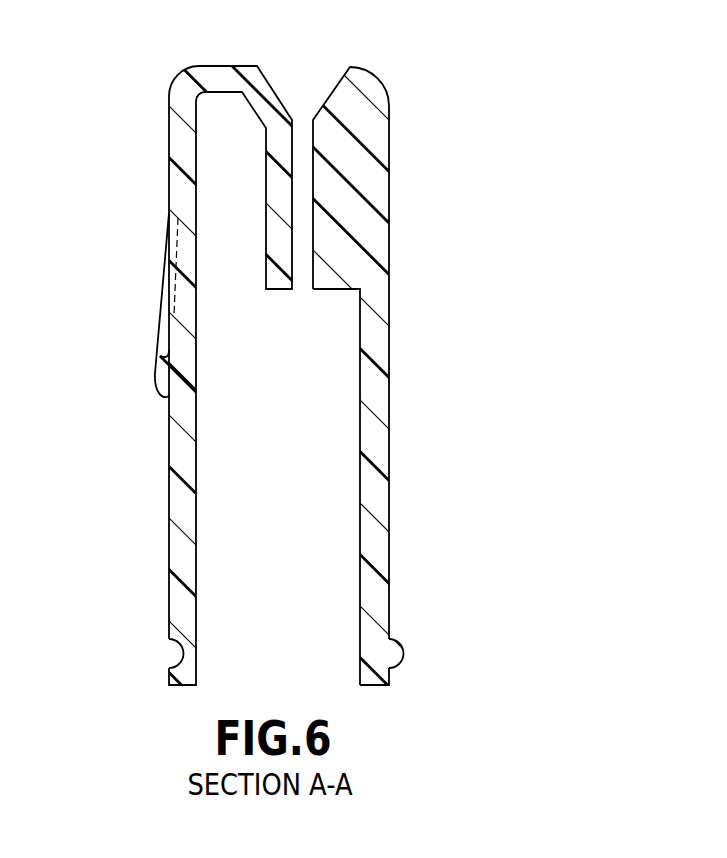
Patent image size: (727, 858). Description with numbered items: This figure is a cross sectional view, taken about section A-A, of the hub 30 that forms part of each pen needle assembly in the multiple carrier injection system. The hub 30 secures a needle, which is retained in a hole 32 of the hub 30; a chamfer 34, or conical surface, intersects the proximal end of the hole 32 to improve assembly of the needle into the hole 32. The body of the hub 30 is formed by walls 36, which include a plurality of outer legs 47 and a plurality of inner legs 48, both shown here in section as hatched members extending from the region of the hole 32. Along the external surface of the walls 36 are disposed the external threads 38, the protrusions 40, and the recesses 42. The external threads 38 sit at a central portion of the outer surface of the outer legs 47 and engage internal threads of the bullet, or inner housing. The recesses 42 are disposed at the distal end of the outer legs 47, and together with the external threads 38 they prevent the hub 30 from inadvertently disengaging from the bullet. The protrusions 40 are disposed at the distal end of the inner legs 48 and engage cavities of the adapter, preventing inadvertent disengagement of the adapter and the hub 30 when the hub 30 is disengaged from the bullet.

The hub 30 is at (314, 429).
The hole 32 is at (309, 429).
The chamfer 34 is at (268, 83).
The walls 36 is at (389, 347).
The external threads 38 is at (157, 373).
The protrusions 40 is at (402, 650).
The recesses 42 is at (183, 652).
The outer legs 47 is at (168, 485).
The inner legs 48 is at (389, 442).